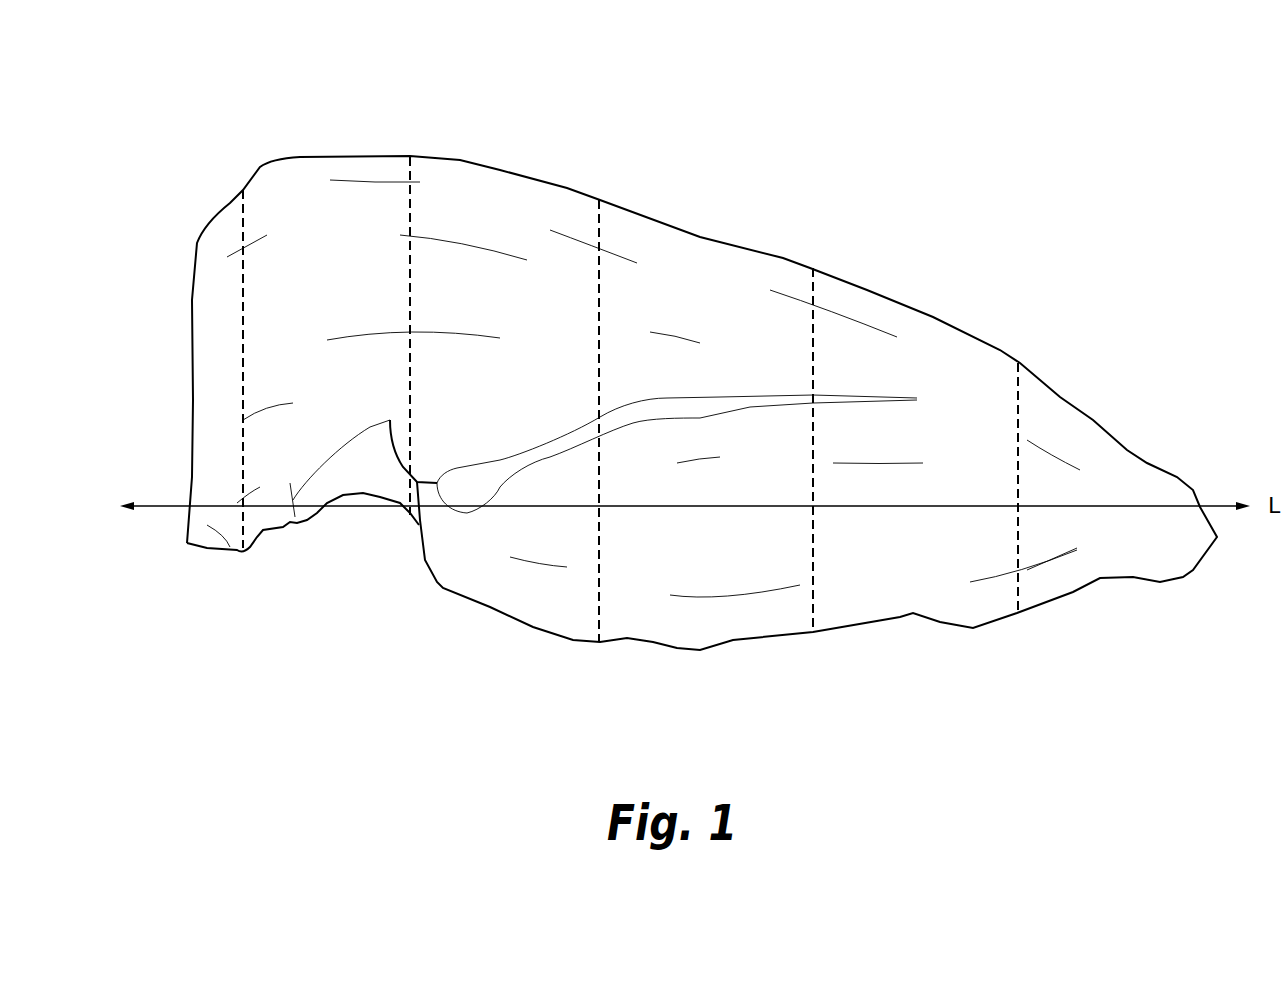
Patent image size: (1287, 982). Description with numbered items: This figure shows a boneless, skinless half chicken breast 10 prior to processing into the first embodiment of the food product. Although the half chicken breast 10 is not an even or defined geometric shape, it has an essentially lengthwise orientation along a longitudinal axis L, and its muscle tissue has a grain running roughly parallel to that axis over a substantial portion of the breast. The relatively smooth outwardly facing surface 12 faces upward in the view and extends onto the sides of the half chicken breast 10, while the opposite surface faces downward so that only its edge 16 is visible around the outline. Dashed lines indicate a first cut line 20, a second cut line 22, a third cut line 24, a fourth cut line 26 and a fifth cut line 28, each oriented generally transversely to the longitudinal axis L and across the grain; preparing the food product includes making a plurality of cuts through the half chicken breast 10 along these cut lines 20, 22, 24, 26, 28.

The half chicken breast 10 is at (274, 82).
The outwardly facing surface 12 is at (235, 317).
The edge 16 is at (207, 548).
The first cut line 20 is at (232, 219).
The second cut line 22 is at (402, 183).
The third cut line 24 is at (589, 213).
The fourth cut line 26 is at (802, 280).
The fifth cut line 28 is at (1012, 371).